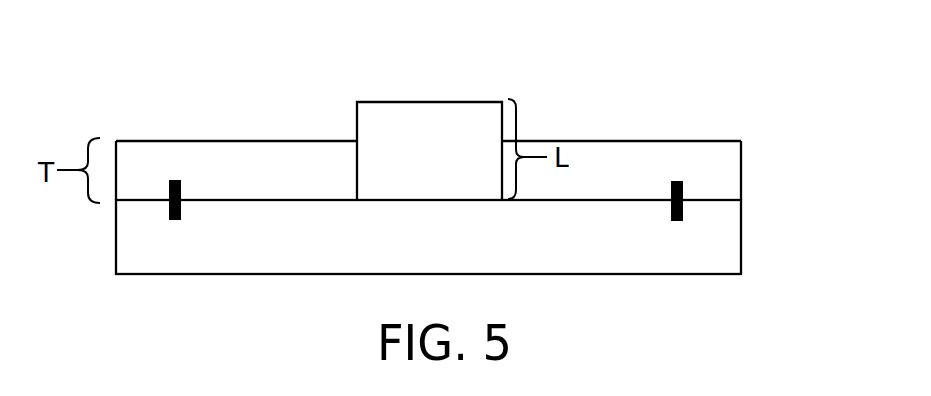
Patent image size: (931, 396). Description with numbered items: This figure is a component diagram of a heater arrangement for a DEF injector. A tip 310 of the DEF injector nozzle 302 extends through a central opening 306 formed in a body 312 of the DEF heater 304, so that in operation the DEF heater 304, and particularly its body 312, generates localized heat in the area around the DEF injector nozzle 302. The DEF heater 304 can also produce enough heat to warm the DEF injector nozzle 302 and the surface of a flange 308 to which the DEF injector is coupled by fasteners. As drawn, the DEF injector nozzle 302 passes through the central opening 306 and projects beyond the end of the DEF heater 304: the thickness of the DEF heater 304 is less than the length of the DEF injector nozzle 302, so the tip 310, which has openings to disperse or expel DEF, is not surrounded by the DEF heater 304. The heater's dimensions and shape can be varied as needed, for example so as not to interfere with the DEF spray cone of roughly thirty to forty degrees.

The DEF injector nozzle 302 is at (385, 82).
The DEF heater 304 is at (712, 105).
The central opening 306 is at (352, 160).
The flange 308 is at (741, 228).
The tip 310 is at (438, 102).
The body 312 is at (643, 140).